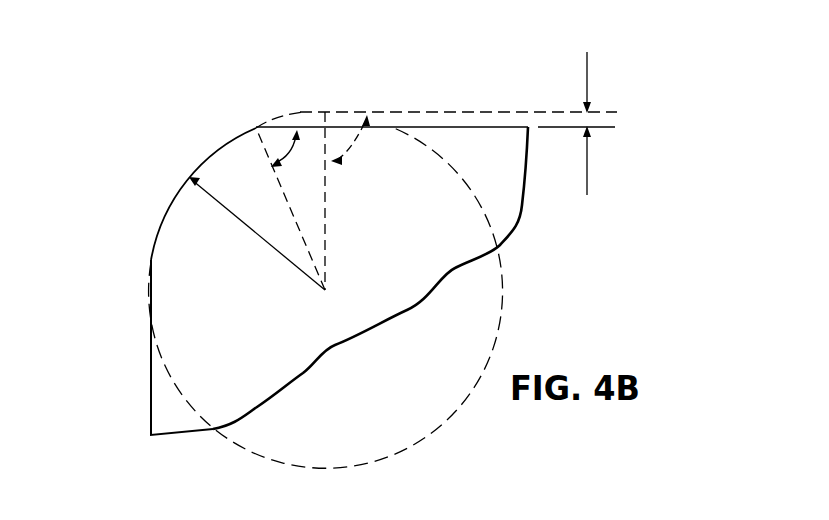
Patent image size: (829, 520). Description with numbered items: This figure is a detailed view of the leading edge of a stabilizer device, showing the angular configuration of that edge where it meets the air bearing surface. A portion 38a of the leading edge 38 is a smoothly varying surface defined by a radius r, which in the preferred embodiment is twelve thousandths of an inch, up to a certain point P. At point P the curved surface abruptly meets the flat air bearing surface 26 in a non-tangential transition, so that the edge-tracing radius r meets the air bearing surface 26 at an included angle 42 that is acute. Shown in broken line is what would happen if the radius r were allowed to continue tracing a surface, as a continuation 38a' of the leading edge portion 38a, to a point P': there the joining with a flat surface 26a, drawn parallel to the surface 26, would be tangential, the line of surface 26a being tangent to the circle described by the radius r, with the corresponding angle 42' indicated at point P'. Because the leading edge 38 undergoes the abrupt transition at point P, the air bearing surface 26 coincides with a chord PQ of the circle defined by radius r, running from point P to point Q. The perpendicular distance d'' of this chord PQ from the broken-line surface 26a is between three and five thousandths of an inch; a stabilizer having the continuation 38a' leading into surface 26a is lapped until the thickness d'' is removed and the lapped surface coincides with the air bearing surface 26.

The leading edge 38 is at (156, 198).
The portion of the leading edge 38a is at (178, 187).
The continuation of the leading edge 38a' is at (280, 74).
The included angle 42 is at (268, 171).
The included angle at point P' 42' is at (355, 171).
The air bearing surface 26 is at (480, 127).
The flat surface 26a is at (447, 112).
The point P is at (262, 175).
The point P' is at (344, 159).
The point Q is at (392, 128).
The radius r is at (240, 221).
The perpendicular distance d'' is at (628, 123).